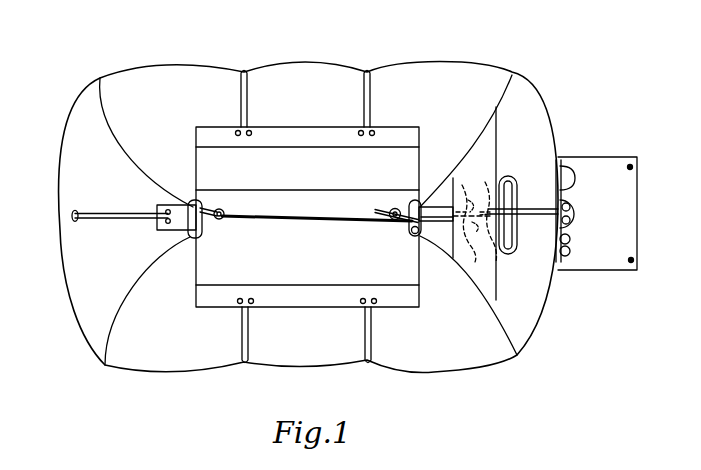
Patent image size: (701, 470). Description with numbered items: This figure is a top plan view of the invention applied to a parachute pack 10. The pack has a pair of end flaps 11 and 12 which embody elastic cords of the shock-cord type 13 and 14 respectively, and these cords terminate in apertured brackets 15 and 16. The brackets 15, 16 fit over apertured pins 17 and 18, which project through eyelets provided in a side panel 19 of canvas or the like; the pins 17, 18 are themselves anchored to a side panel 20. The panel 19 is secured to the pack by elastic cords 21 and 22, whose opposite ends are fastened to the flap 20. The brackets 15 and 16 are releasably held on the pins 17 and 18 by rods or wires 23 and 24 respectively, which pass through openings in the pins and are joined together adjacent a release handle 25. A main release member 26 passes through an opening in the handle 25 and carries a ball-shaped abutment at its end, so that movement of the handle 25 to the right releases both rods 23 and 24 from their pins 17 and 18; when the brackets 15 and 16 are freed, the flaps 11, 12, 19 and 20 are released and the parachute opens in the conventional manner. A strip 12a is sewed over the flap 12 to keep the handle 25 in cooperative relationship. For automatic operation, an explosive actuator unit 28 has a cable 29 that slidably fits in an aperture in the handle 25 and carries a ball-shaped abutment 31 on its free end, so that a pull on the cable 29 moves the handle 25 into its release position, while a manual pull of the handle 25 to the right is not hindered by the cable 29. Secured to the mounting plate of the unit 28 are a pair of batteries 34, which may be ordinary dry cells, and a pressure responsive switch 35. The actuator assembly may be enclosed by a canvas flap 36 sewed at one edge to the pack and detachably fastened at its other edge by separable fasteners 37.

The parachute pack 10 is at (482, 78).
The end flap 11 is at (72, 262).
The end flap 12 is at (518, 313).
The strip 12a is at (481, 153).
The elastic cord 13 is at (93, 212).
The elastic cord 14 is at (538, 216).
The apertured bracket 15 is at (206, 230).
The apertured bracket 16 is at (410, 235).
The apertured pin 17 is at (221, 209).
The apertured pin 18 is at (392, 208).
The side panel 19 is at (313, 263).
The side panel 20 is at (308, 173).
The elastic cord 21 is at (243, 360).
The elastic cord 22 is at (362, 88).
The rod or wire 23 is at (292, 217).
The rod or wire 24 is at (380, 211).
The release handle 25 is at (511, 180).
The main release member 26 is at (468, 260).
The explosive actuator unit 28 is at (573, 213).
The cable 29 is at (528, 207).
The ball-shaped abutment 31 is at (487, 192).
The batteries 34 is at (571, 251).
The pressure responsive switch 35 is at (569, 178).
The canvas flap 36 is at (637, 218).
The separable fasteners 37 is at (640, 167).